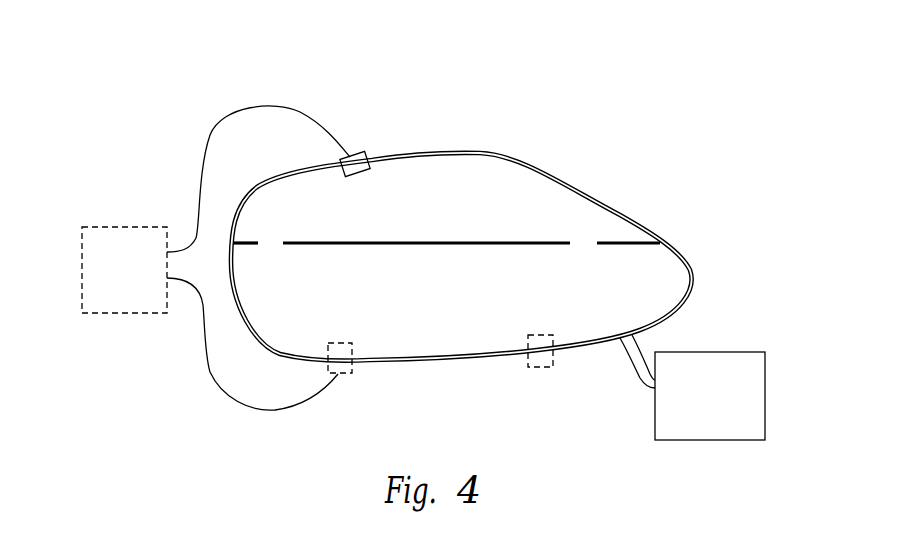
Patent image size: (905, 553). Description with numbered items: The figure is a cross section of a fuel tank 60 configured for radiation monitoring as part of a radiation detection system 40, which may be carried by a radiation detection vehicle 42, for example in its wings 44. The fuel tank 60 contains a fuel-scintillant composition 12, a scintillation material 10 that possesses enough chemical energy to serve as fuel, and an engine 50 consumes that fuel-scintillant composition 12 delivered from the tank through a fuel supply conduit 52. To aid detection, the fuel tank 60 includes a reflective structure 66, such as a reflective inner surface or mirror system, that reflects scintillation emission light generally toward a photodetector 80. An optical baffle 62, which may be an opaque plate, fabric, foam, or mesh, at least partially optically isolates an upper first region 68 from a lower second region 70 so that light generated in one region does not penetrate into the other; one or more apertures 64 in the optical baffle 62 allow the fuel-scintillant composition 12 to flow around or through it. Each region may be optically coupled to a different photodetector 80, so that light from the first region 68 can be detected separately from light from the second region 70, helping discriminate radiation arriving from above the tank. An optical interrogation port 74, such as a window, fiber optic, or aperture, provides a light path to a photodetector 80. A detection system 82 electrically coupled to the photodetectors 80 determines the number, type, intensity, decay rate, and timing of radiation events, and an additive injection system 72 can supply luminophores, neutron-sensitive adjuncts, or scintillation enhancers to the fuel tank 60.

The scintillation materials 10 is at (563, 292).
The fuel-scintillant composition 12 is at (630, 231).
The radiation detection system 40 is at (604, 78).
The radiation detection vehicle 42 is at (644, 94).
The wings 44 is at (681, 112).
The engine 50 is at (719, 408).
The fuel supply conduit 52 is at (627, 362).
The fuel tank 60 is at (511, 159).
The optical baffle 62 is at (438, 246).
The aperture 64 is at (280, 246).
The reflective structure 66 is at (333, 241).
The first region 68 is at (460, 185).
The second region 70 is at (460, 338).
The additive injection system 72 is at (538, 368).
The optical interrogation port 74 is at (353, 364).
The photodetector 80 is at (357, 178).
The detection system 82 is at (132, 282).